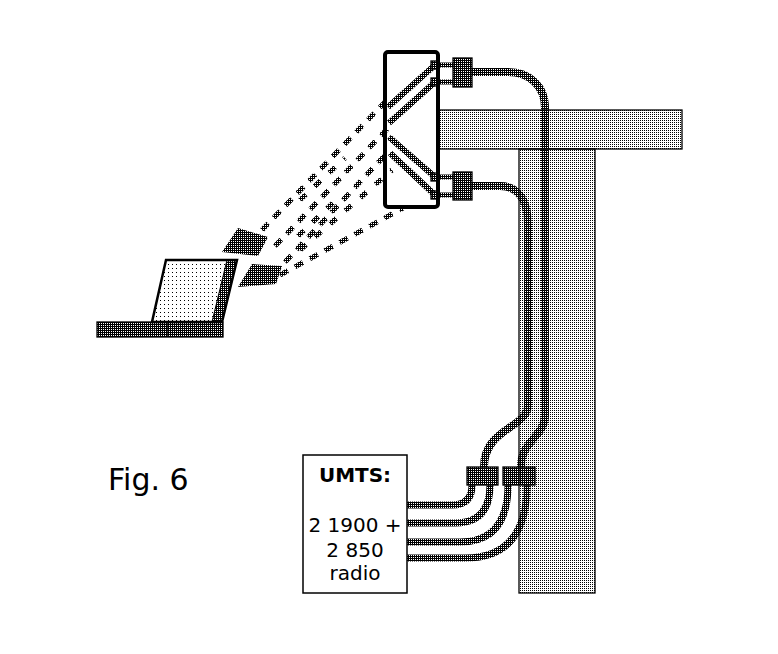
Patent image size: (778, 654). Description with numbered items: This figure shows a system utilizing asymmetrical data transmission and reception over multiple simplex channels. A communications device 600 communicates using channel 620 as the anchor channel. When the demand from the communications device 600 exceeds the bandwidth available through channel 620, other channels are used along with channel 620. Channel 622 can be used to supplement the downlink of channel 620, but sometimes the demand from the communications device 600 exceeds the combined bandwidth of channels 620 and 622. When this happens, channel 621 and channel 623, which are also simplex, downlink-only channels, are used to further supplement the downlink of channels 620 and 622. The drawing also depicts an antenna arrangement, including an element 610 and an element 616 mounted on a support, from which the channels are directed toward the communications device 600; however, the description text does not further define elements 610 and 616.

The communications device 600 is at (136, 270).
The antenna system 610 is at (465, 279).
The antenna housing 616 is at (459, 104).
The channel 620 is at (323, 255).
The channel 621 is at (356, 232).
The channel 622 is at (303, 151).
The channel 623 is at (306, 171).